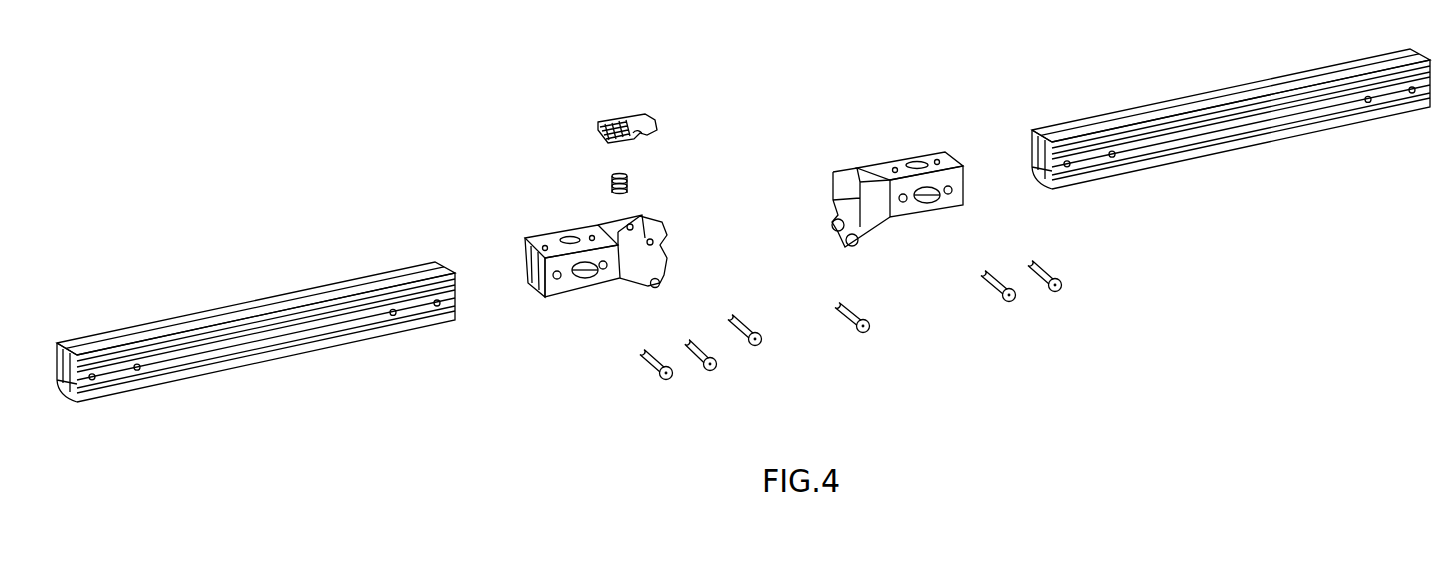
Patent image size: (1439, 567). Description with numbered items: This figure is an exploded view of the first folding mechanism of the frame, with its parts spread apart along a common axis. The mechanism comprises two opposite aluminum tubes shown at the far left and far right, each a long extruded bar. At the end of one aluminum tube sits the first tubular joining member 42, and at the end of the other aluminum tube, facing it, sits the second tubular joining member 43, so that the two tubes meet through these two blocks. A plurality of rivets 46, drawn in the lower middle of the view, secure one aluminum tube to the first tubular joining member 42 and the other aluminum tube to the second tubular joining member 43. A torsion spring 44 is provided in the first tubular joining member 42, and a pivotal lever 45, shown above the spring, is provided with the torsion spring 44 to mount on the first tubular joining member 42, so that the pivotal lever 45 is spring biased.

The first tubular joining member 42 is at (650, 260).
The second tubular joining member 43 is at (863, 172).
The torsion spring 44 is at (627, 175).
The pivotal lever 45 is at (635, 125).
The rivets 46 is at (755, 342).